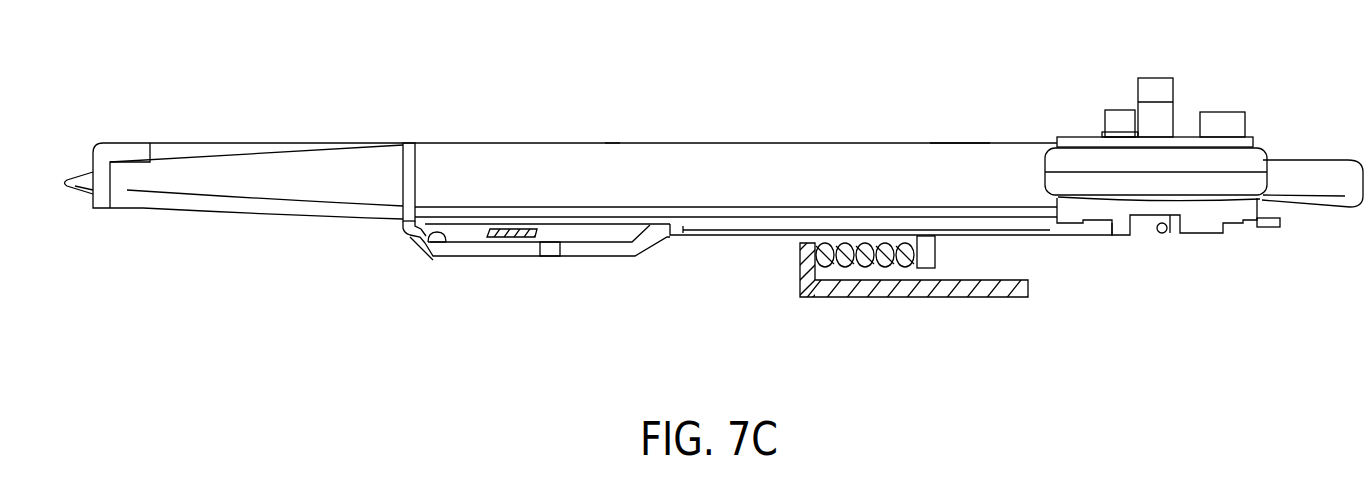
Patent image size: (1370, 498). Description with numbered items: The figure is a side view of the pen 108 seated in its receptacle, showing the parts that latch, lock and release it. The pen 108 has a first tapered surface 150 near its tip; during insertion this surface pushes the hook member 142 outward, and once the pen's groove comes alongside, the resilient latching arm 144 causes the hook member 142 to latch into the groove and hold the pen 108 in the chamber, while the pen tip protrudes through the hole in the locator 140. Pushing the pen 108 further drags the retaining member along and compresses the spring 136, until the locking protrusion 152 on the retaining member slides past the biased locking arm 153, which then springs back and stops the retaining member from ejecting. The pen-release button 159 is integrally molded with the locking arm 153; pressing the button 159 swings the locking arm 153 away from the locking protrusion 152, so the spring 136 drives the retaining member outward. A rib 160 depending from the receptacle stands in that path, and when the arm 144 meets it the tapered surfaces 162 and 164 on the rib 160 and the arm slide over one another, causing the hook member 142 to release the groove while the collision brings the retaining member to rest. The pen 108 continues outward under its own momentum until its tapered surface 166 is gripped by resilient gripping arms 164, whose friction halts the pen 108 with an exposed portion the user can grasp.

The pen 108 is at (660, 143).
The spring 136 is at (867, 265).
The locator 140 is at (128, 150).
The hook member 142 is at (403, 227).
The resilient latching arm 144 is at (592, 258).
The first tapered surface 150 is at (280, 222).
The locking protrusion 152 is at (1120, 122).
The locking arm 153 is at (1155, 82).
The pen-release button 159 is at (1258, 157).
The rib 160 is at (524, 245).
The tapered surface 162 is at (497, 242).
The tapered surface 164 is at (612, 143).
The tapered surface 166 is at (958, 142).